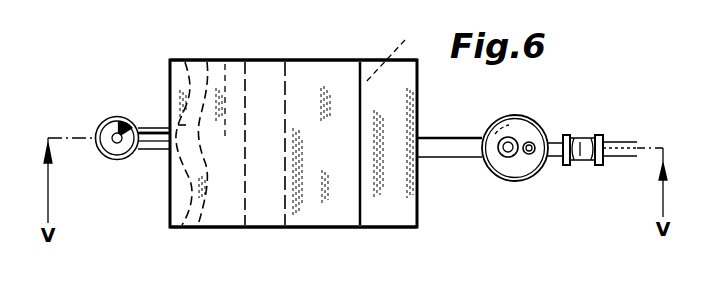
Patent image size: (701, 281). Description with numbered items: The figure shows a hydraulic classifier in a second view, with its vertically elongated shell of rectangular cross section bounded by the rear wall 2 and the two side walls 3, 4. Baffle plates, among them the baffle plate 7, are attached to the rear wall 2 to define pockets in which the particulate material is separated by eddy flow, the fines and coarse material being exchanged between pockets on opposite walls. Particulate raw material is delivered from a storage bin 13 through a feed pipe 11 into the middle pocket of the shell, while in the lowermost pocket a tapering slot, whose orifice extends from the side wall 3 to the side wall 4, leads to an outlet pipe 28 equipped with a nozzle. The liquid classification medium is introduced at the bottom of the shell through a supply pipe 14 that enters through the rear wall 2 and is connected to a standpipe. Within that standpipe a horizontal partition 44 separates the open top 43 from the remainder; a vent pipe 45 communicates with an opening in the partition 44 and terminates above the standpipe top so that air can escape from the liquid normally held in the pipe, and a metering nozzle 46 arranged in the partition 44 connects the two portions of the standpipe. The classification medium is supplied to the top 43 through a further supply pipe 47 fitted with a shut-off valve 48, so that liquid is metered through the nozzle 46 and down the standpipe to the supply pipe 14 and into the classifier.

The baffle plate 7 is at (170, 76).
The rear wall 2 is at (388, 124).
The side wall 3 is at (265, 60).
The side wall 4 is at (226, 228).
The feed pipe 11 is at (160, 143).
The storage bin 13 is at (107, 156).
The supply pipe 14 is at (442, 146).
The outlet pipe 28 is at (156, 130).
The open top 43 is at (506, 117).
The horizontal partition 44 is at (494, 160).
The vent pipe 45 is at (530, 155).
The metering nozzle 46 is at (507, 157).
The supply pipe 47 is at (554, 142).
The shut-off valve 48 is at (583, 161).